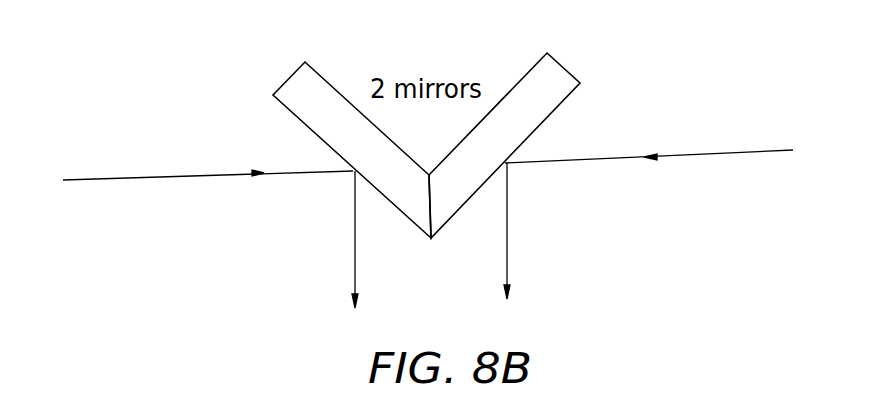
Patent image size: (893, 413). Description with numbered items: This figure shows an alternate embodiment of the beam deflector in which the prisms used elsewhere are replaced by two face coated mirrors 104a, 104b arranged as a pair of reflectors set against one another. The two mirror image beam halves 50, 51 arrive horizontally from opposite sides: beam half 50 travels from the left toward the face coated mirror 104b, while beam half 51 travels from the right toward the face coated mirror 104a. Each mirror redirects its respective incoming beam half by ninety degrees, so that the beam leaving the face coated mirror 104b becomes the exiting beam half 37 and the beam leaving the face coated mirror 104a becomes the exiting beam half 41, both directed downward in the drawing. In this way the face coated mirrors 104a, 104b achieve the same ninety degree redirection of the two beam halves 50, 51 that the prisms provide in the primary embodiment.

The face coated mirror 104a is at (538, 53).
The face coated mirror 104b is at (315, 70).
The beam half 50 is at (163, 176).
The beam half 51 is at (708, 152).
The beam half 37 is at (353, 220).
The beam half 41 is at (507, 218).